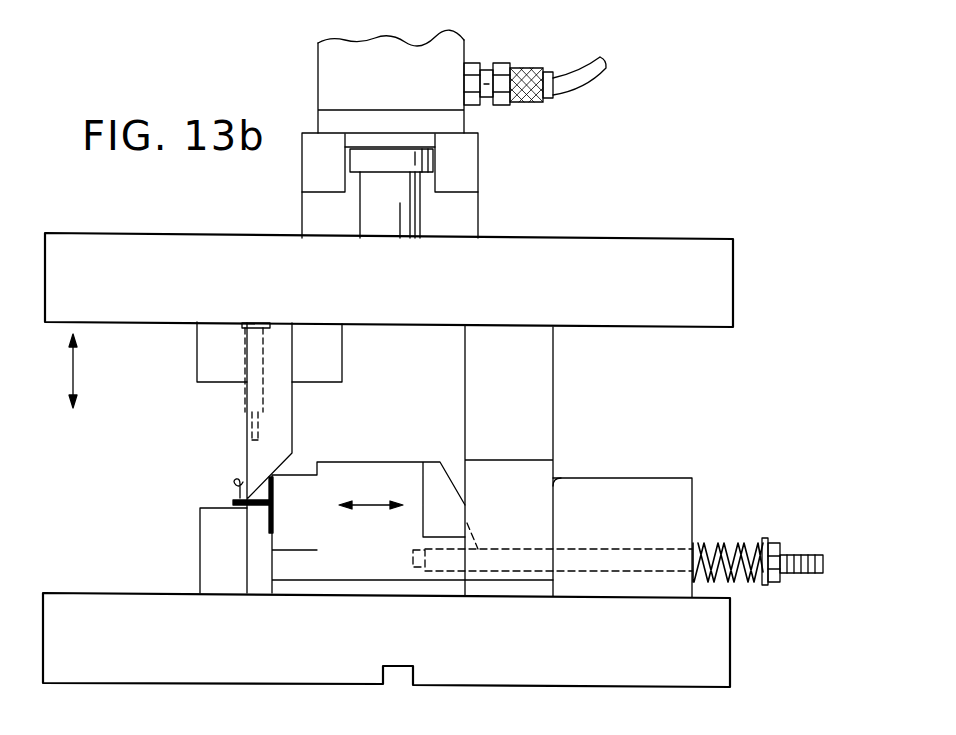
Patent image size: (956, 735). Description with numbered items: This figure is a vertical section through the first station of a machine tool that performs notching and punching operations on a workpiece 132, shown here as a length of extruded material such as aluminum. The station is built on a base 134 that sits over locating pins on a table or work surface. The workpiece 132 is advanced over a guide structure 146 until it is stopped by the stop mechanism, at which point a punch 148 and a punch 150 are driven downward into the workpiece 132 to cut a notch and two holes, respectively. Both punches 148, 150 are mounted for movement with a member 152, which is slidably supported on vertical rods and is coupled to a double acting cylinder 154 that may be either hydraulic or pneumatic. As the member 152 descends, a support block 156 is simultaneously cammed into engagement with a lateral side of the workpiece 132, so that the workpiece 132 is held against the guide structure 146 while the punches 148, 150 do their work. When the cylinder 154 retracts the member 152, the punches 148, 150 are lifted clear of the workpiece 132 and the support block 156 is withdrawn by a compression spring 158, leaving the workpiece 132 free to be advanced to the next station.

The workpiece 132 is at (233, 497).
The base 134 is at (715, 650).
The guide structure 146 is at (217, 552).
The punch 148 is at (247, 452).
The punch 150 is at (245, 401).
The member 152 is at (188, 248).
The double acting cylinder 154 is at (318, 77).
The support block 156 is at (367, 477).
The compression spring 158 is at (727, 540).